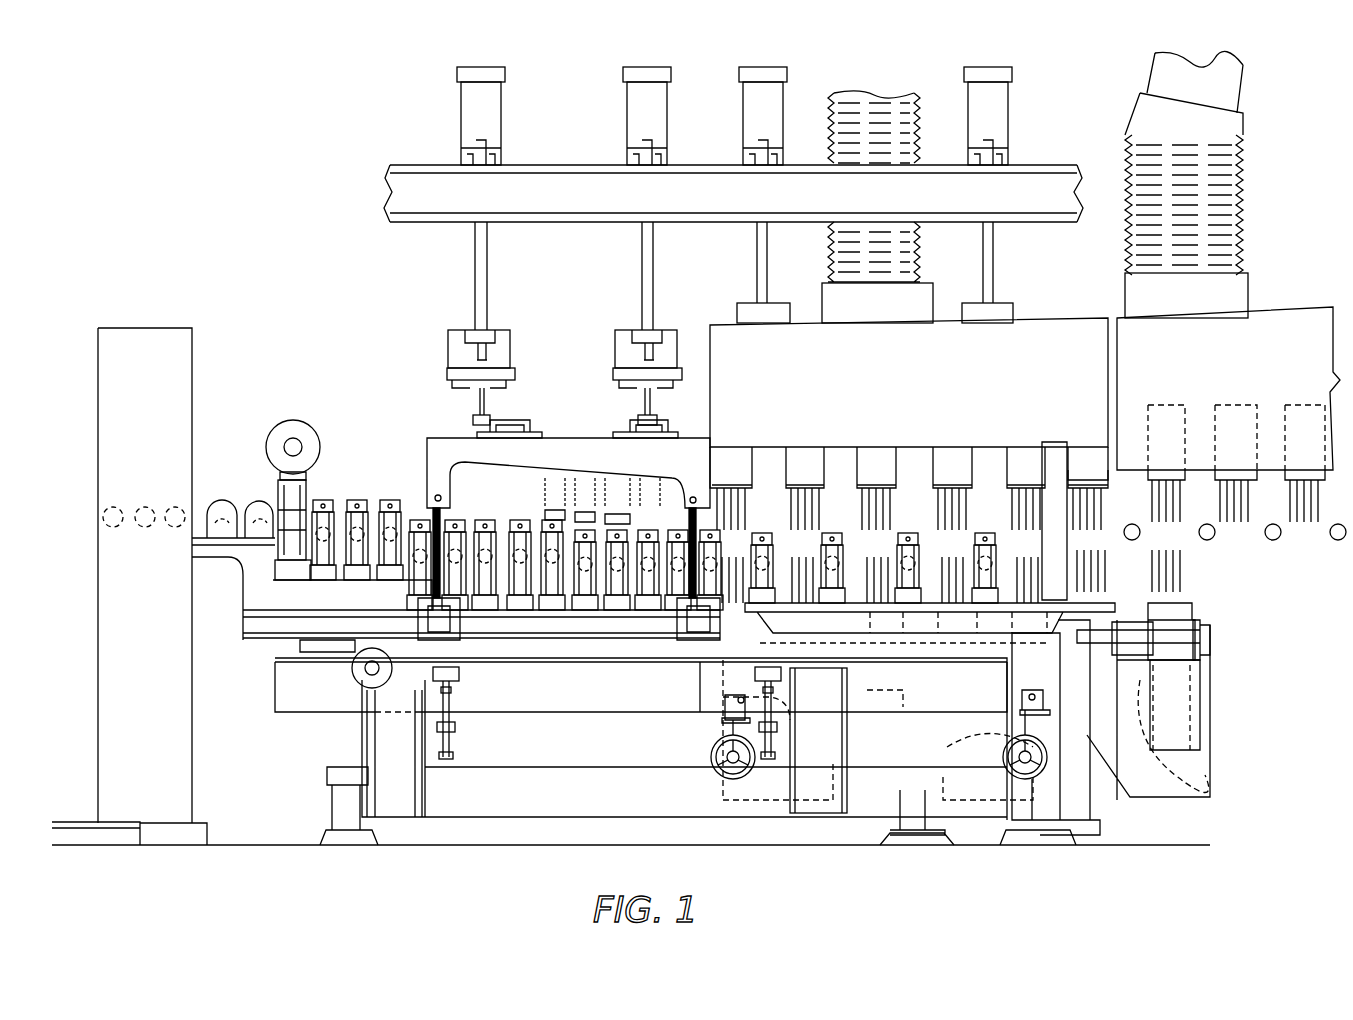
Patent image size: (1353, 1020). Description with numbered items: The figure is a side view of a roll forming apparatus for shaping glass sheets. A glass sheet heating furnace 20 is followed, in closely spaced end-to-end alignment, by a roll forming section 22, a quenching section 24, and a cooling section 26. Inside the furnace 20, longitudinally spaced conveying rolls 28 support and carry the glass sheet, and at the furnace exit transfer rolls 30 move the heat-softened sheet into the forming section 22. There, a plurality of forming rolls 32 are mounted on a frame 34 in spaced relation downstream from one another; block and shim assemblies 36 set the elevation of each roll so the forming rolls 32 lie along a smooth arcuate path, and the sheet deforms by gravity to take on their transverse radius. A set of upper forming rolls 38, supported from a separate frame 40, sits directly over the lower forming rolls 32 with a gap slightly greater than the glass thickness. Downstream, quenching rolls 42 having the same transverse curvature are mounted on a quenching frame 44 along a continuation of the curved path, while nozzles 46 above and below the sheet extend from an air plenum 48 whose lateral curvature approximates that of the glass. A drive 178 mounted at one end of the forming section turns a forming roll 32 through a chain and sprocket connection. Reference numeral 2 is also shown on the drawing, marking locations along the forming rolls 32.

The carrier 2 is at (430, 500).
The glass sheet heating furnace 20 is at (152, 296).
The roll forming section 22 is at (577, 121).
The quenching section 24 is at (897, 70).
The cooling section 26 is at (1312, 162).
The conveying rolls 28 is at (170, 505).
The transfer rolls 30 is at (212, 525).
The forming rolls 32 is at (385, 510).
The frame 34 is at (277, 643).
The block and shim assemblies 36 is at (505, 600).
The upper forming rolls 38 is at (552, 508).
The frame 40 is at (572, 438).
The quenching rolls 42 is at (905, 545).
The quenching frame 44 is at (930, 640).
The nozzles 46 is at (1045, 539).
The air plenum 48 is at (1062, 318).
The drive 178 is at (300, 421).